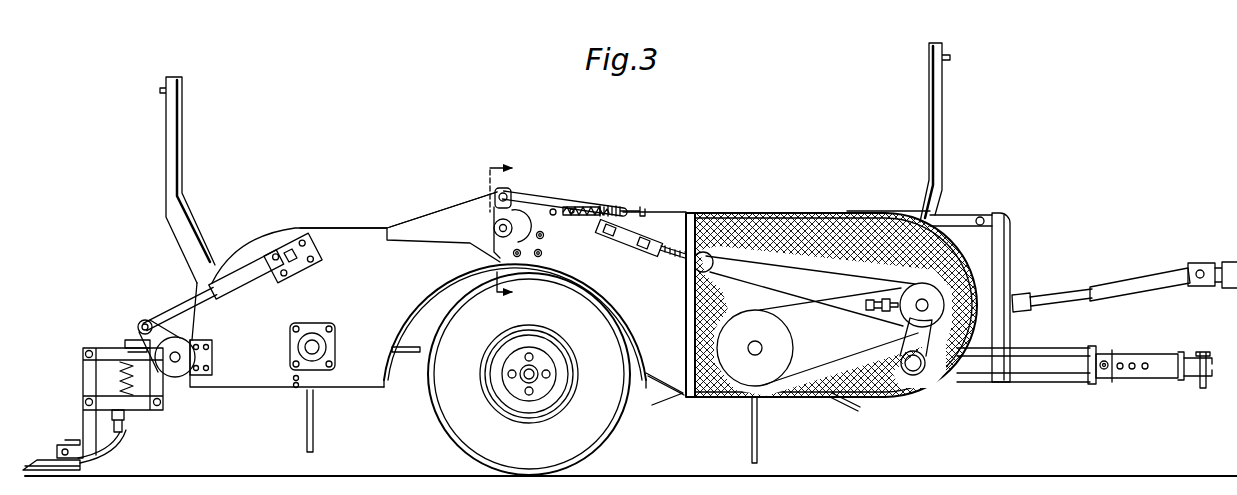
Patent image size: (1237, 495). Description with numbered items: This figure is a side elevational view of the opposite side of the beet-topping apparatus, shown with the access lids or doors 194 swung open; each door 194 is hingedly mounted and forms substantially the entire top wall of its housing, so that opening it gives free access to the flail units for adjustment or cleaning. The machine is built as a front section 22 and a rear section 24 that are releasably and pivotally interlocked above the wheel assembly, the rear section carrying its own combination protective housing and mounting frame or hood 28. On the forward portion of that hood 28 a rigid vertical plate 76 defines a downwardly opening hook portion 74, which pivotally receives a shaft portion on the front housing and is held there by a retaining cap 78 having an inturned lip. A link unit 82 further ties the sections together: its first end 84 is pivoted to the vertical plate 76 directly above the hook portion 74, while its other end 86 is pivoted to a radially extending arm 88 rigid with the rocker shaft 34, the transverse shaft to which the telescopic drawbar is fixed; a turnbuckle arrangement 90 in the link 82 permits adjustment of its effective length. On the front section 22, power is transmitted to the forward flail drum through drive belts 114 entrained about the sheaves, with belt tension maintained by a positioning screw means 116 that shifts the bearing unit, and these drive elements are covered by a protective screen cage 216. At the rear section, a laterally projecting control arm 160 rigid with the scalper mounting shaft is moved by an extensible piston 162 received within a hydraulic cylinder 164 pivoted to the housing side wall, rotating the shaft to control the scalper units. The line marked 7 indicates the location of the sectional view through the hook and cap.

The front section 22 is at (808, 207).
The rear section 24 is at (281, 226).
The rear section housing 28 is at (358, 246).
The rocker shaft 34 is at (921, 381).
The hook portion 74 is at (518, 237).
The vertical plate 76 is at (434, 208).
The retaining cap 78 is at (494, 228).
The link unit 82 is at (677, 262).
The first end 84 is at (513, 198).
The other end 86 is at (898, 327).
The radially extending arm 88 is at (935, 373).
The turnbuckle arrangement 90 is at (638, 250).
The drive belts 114 is at (796, 305).
The positioning screw means 116 is at (881, 300).
The control arm 160 is at (156, 344).
The piston 162 is at (173, 318).
The hydraulic cylinder 164 is at (246, 288).
The lids or doors 194 is at (180, 134).
The protective screen cages 216 is at (874, 402).
The section line 7- 7 is at (513, 235).